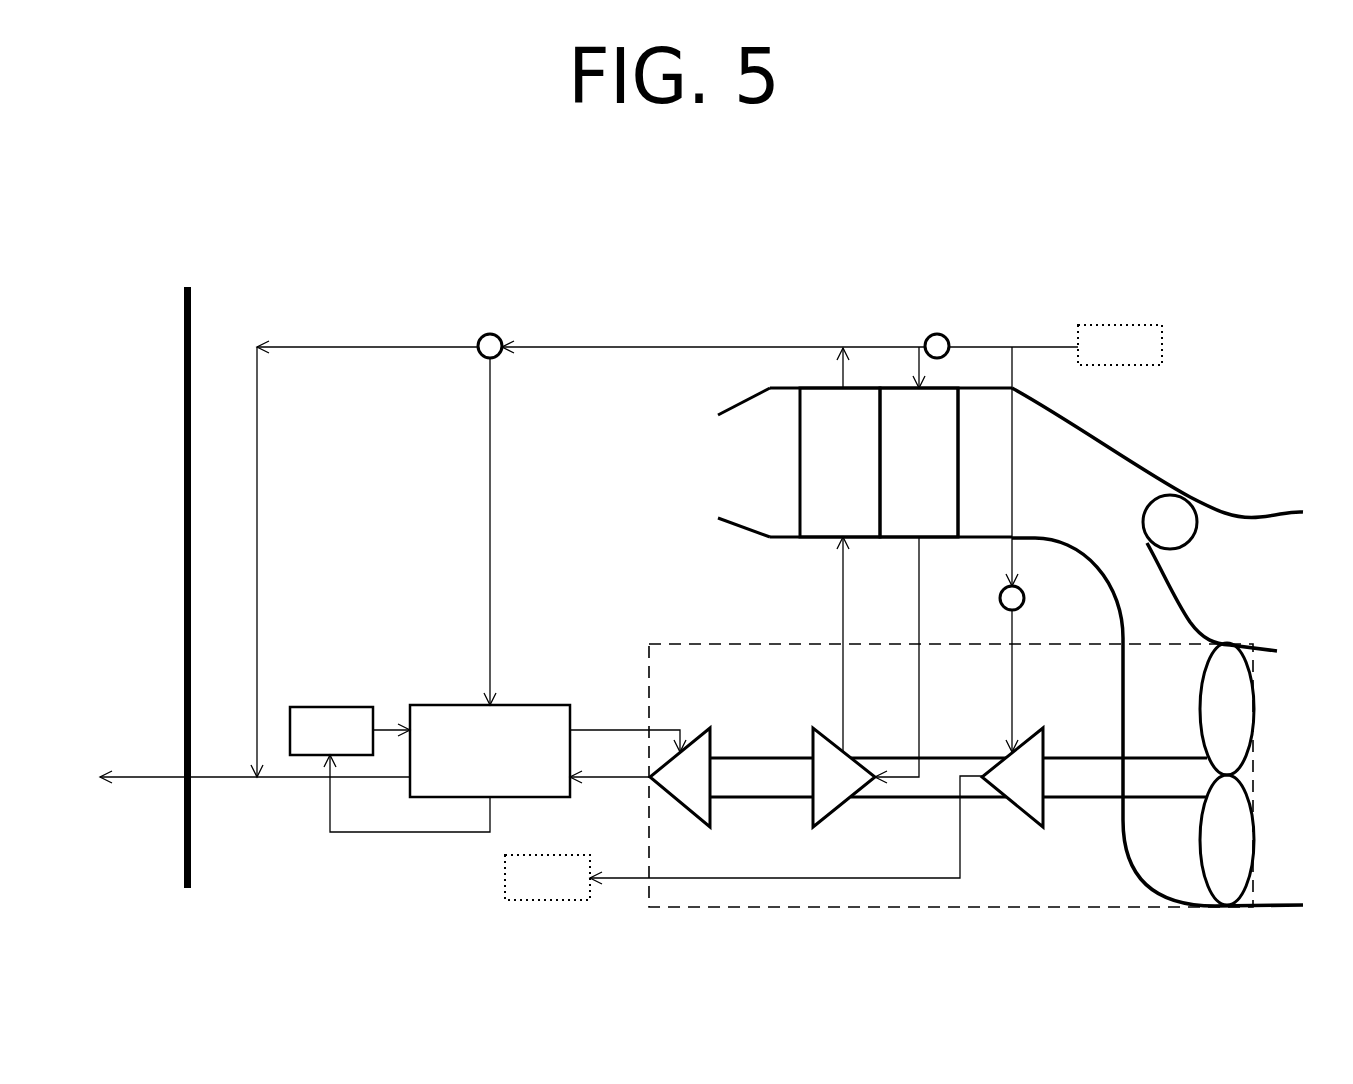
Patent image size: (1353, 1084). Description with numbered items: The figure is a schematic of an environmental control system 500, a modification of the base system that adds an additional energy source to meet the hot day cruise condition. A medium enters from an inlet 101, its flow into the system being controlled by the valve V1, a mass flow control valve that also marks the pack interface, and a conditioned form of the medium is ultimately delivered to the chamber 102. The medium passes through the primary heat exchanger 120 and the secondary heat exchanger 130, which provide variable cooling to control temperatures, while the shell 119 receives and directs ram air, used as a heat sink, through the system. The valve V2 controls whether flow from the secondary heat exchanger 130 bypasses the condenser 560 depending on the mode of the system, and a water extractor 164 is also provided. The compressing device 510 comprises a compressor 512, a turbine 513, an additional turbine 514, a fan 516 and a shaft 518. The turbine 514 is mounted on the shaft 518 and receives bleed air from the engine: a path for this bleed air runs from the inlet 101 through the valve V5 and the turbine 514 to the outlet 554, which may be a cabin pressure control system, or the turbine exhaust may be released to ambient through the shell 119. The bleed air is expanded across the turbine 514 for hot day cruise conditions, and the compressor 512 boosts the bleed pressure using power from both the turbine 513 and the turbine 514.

The environmental control system 500 is at (1160, 152).
The chamber 102 is at (183, 287).
The inlet 101 is at (1120, 345).
The shell 119 is at (1172, 484).
The secondary heat exchanger 130 is at (840, 462).
The primary heat exchanger 120 is at (919, 462).
The water extractor 164 is at (350, 731).
The condenser 560 is at (490, 751).
The valve V1 is at (928, 337).
The valve V2 is at (480, 340).
The valve V5 is at (1002, 590).
The compressing device 510 is at (750, 908).
The compressor 512 is at (844, 777).
The turbine 513 is at (681, 777).
The turbine 514 is at (1012, 777).
The fan 516 is at (1176, 835).
The shaft 518 is at (1058, 800).
The outlet 554 is at (547, 877).